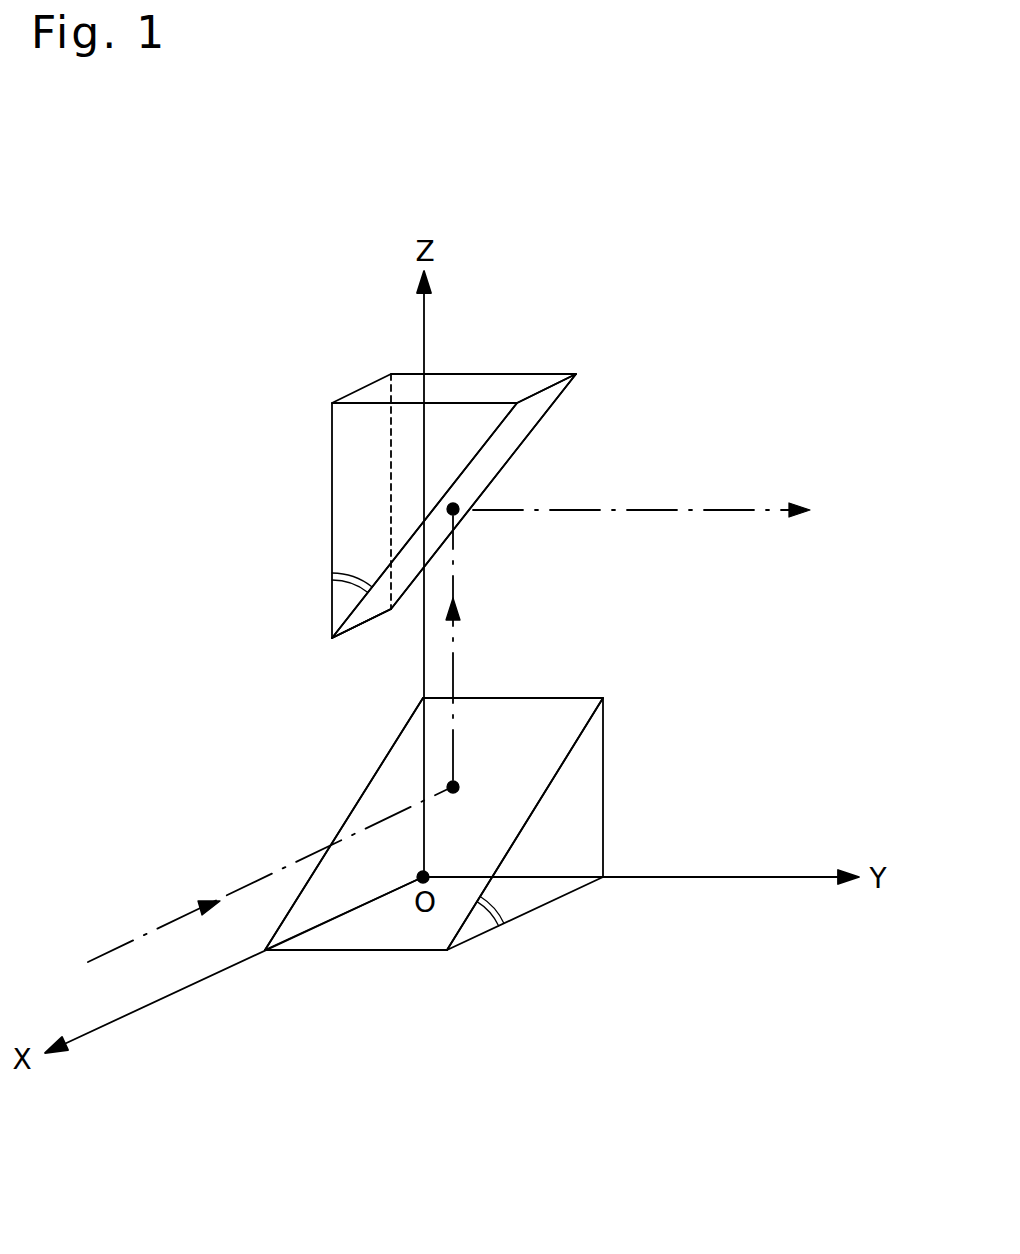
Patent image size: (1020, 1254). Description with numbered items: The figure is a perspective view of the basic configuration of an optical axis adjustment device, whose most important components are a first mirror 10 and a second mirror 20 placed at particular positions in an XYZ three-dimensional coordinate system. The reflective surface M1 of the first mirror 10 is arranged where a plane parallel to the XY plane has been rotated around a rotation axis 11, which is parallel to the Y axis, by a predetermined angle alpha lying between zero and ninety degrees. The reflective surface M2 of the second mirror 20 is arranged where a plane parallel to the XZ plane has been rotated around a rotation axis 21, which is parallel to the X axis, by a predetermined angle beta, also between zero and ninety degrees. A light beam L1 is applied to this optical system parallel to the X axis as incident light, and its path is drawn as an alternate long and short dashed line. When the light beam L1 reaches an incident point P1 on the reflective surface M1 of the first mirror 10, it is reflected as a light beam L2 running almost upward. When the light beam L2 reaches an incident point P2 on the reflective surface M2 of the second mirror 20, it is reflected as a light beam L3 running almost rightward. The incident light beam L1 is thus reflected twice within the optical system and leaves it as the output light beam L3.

The first mirror 10 is at (655, 724).
The rotation axis 11 is at (360, 951).
The second mirror 20 is at (604, 352).
The rotation axis 21 is at (362, 627).
The reflective surface M1 is at (383, 795).
The reflective surface M2 is at (516, 433).
The incident point P1 is at (456, 784).
The incident point P2 is at (457, 512).
The light beam L1 is at (238, 887).
The light beam L2 is at (471, 648).
The light beam L3 is at (670, 511).